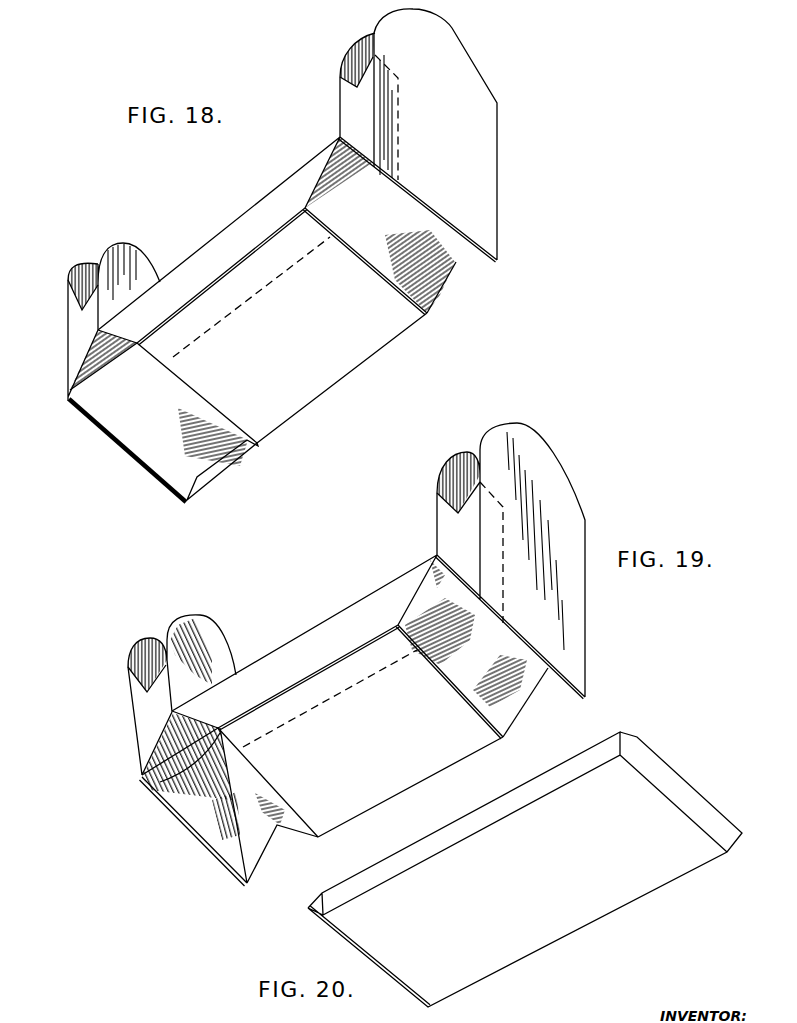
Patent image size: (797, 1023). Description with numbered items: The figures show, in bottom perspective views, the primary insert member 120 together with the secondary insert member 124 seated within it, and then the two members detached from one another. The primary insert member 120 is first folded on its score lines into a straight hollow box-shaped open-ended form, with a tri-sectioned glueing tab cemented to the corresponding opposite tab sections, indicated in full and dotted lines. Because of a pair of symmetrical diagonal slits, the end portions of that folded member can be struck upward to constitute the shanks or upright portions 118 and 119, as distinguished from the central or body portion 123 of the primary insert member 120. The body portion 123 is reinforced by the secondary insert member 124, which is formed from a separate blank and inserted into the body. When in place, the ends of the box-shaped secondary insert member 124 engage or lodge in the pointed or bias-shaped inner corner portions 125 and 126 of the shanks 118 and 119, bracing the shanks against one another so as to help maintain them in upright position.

In FIG. 18, the shank 118 is at (62, 335).
In FIG. 19, the shank 118 is at (122, 729).
In FIG. 18, the shank 119 is at (333, 124).
In FIG. 19, the shank 119 is at (427, 532).
In FIG. 18, the primary insert member 120 is at (333, 395).
In FIG. 19, the primary insert member 120 is at (265, 645).
In FIG. 18, the body portion 123 is at (228, 245).
In FIG. 19, the body portion 123 is at (345, 623).
In FIG. 18, the secondary insert member 124 is at (452, 263).
In FIG. 20, the secondary insert member 124 is at (600, 907).
In FIG. 18, the inner corner portion 125 is at (72, 370).
In FIG. 18, the inner corner portion 126 is at (365, 144).